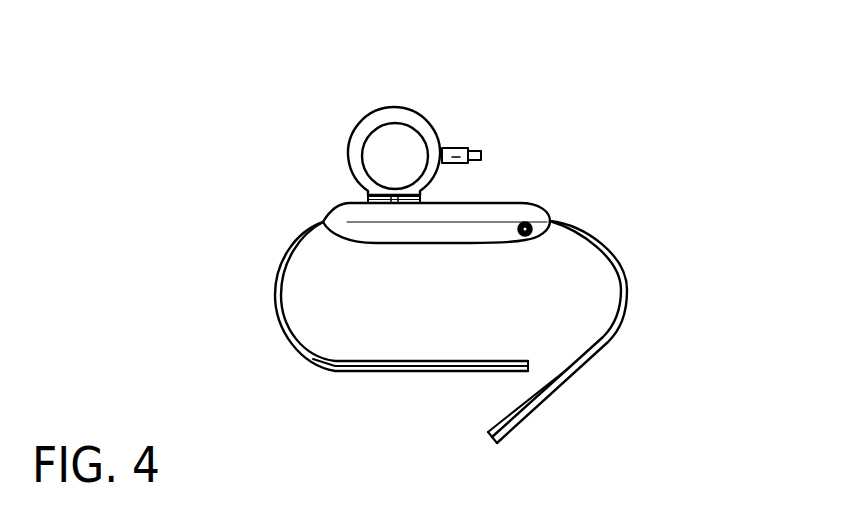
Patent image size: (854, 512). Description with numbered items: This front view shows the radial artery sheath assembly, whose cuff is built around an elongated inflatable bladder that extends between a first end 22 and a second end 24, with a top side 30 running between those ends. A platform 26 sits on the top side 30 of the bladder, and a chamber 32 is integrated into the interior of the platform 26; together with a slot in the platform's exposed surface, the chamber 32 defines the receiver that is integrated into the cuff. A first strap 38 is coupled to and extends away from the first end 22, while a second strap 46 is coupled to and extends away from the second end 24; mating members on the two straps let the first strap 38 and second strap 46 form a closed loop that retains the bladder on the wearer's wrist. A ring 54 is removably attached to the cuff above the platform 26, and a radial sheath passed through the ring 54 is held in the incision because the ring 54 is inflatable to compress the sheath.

The first end 22 is at (556, 211).
The second end 24 is at (323, 221).
The platform 26 is at (404, 196).
The top side 30 is at (492, 203).
The chamber 32 is at (528, 204).
The first strap 38 is at (623, 272).
The second strap 46 is at (276, 286).
The ring 54 is at (350, 138).